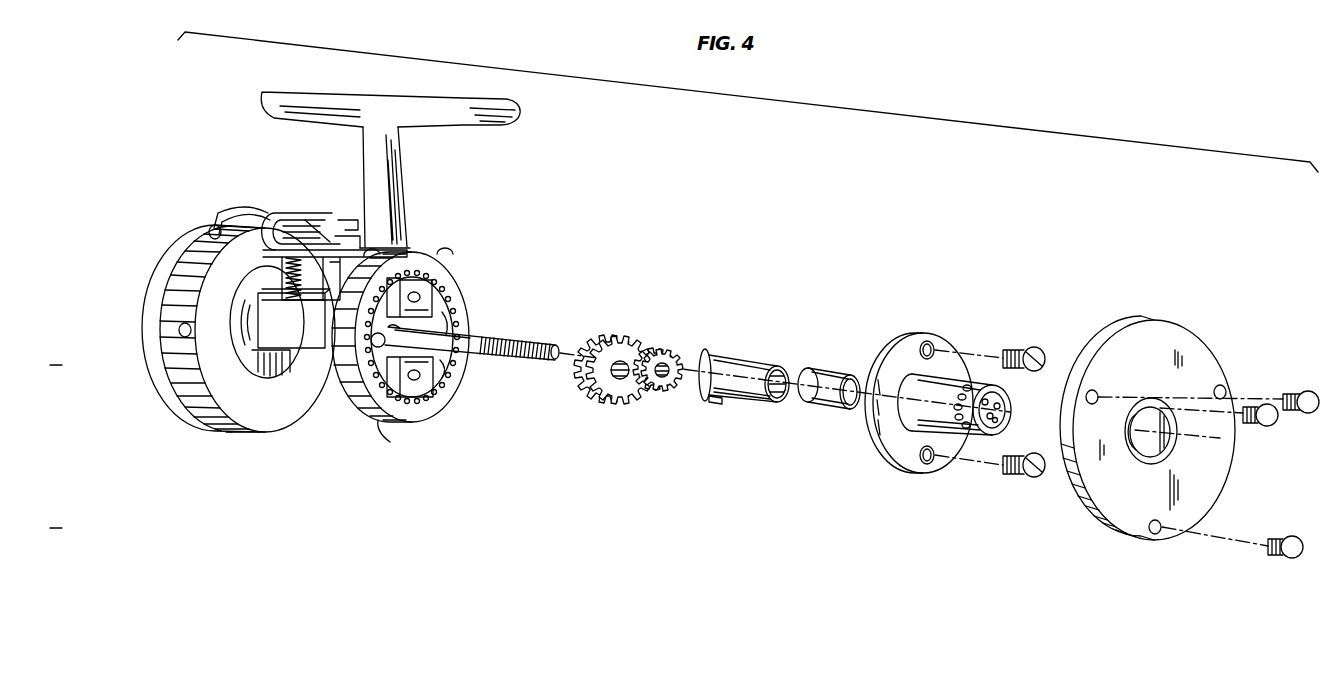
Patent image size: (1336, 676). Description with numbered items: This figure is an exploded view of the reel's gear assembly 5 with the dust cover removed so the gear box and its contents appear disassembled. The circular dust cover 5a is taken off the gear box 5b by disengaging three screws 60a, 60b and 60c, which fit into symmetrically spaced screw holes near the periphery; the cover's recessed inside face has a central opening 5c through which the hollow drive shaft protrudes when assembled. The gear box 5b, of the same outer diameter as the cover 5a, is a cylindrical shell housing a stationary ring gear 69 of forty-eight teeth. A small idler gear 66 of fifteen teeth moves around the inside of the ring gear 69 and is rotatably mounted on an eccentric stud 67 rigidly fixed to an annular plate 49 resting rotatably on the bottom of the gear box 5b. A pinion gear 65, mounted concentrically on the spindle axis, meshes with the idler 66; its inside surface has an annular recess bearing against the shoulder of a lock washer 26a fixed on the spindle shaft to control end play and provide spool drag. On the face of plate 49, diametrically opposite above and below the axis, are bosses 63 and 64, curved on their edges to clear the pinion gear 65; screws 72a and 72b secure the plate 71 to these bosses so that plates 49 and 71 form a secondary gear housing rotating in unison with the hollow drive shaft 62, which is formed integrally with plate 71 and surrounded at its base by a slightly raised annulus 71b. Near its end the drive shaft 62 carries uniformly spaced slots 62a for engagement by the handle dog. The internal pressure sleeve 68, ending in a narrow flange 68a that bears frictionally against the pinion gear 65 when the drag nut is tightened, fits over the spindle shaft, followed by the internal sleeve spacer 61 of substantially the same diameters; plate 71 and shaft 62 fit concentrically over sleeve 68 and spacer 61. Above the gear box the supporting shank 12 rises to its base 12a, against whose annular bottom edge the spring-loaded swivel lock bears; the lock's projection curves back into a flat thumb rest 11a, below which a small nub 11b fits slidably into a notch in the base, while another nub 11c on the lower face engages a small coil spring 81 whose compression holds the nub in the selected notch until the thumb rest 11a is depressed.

The gear housing 5 is at (463, 250).
The dust cover 5a is at (1200, 358).
The gear box 5b is at (380, 422).
The cover bore 5c is at (1165, 440).
The thumb rest 11a is at (300, 213).
The nub 11b is at (330, 240).
The nub 11c is at (268, 212).
The supporting shank 12 is at (366, 154).
The base 12a is at (378, 100).
The lock washer 26a is at (452, 328).
The annular plate 49 is at (442, 370).
The screw 60a is at (1296, 391).
The screw 60b is at (1252, 424).
The screw 60c is at (1280, 538).
The internal sleeve spacer 61 is at (826, 376).
The hollow drive shaft 62 is at (1010, 400).
The slots 62a is at (968, 385).
The boss 63 is at (432, 300).
The boss 64 is at (430, 390).
The pinion gear 65 is at (670, 350).
The idler gear 66 is at (615, 405).
The eccentric stud 67 is at (358, 345).
The internal pressure sleeve 68 is at (752, 372).
The flange 68a is at (722, 404).
The ring gear 69 is at (450, 322).
The plate 71 is at (893, 448).
The raised annulus 71b is at (910, 378).
The screw 72a is at (1018, 352).
The screw 72b is at (1005, 476).
The coil spring 81 is at (285, 261).